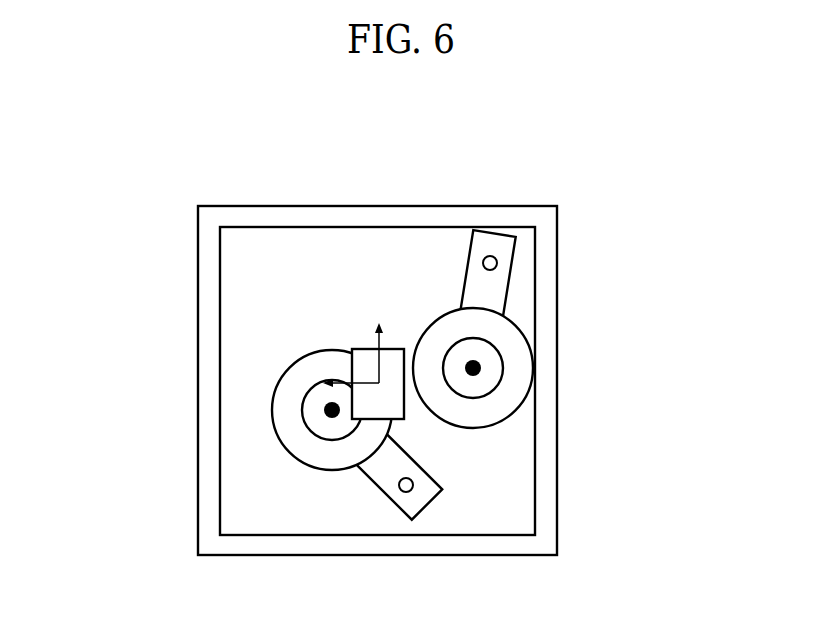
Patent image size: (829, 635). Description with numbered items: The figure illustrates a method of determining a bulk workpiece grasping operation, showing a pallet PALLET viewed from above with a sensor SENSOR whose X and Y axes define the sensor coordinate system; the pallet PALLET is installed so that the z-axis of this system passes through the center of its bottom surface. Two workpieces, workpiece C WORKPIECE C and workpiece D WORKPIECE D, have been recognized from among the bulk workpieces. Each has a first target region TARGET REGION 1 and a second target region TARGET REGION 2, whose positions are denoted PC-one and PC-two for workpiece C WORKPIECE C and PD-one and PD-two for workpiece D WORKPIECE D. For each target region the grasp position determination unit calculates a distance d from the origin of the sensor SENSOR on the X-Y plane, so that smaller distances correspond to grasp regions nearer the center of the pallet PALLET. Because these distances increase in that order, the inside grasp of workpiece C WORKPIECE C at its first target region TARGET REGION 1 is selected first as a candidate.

The pallet PALLET is at (507, 545).
The workpiece C WORKPIECE C is at (290, 421).
The workpiece D WORKPIECE D is at (474, 285).
The sensor SENSOR is at (367, 358).
The target region 1 TARGET REGION 1 is at (468, 377).
The target region 2 TARGET REGION 2 is at (416, 485).